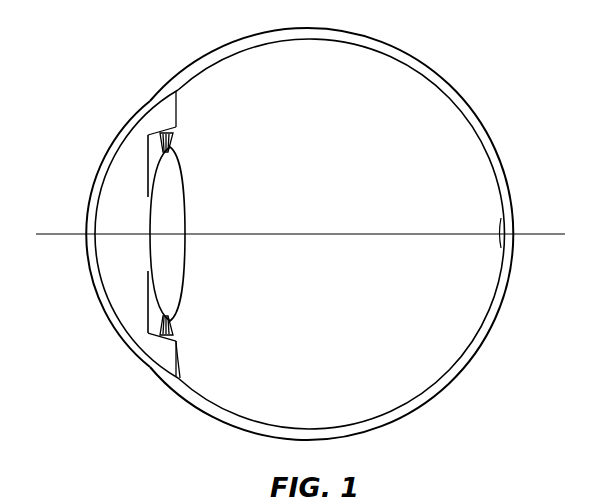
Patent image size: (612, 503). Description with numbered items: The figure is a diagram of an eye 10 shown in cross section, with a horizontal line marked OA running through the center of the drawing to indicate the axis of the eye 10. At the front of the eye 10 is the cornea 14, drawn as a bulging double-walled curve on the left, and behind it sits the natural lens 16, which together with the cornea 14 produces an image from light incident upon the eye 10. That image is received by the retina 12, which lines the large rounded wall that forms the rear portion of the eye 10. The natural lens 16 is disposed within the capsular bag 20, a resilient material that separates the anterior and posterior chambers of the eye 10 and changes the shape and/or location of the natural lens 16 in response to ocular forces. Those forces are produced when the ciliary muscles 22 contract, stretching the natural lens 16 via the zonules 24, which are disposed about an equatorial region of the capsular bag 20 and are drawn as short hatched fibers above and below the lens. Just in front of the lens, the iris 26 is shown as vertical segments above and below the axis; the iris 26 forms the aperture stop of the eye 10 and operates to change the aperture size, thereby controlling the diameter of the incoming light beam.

The eye 10 is at (83, 42).
The retina 12 is at (487, 308).
The cornea 14 is at (92, 283).
The natural lens 16 is at (185, 178).
The capsular bag 20 is at (185, 262).
The ciliary muscles 22 is at (180, 363).
The zonules 24 is at (176, 330).
The iris 26 is at (148, 307).
The optical axis OA is at (68, 233).